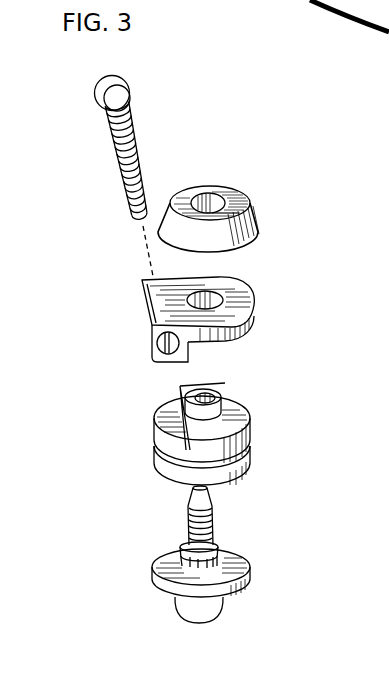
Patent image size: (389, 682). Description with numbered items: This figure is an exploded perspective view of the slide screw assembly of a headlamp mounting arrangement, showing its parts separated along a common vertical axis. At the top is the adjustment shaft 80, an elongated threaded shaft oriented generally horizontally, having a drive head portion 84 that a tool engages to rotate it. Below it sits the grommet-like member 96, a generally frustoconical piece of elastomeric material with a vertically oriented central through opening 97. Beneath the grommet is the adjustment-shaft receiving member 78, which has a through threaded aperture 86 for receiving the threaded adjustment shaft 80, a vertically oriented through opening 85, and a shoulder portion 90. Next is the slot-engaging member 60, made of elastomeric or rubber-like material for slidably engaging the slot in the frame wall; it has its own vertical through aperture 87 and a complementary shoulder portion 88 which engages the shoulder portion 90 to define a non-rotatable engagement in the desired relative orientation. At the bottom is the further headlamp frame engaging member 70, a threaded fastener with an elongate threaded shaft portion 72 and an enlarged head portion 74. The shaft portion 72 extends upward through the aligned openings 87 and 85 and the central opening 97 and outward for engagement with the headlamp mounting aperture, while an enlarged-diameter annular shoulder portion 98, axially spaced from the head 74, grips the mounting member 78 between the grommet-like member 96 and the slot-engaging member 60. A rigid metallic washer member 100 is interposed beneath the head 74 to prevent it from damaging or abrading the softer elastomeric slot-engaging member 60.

The drive head portion 84 is at (128, 78).
The adjustment shaft 80 is at (109, 158).
The central through opening 97 is at (212, 205).
The grommet-like member 96 is at (235, 200).
The through opening 85 is at (212, 293).
The adjustment-shaft receiving member 78 is at (194, 329).
The threaded aperture 86 is at (160, 347).
The shoulder portion 90 is at (194, 356).
The shoulder portion 88 is at (180, 398).
The through aperture 87 is at (222, 390).
The slot-engaging member 60 is at (211, 412).
The headlamp frame engaging member 70 is at (215, 561).
The threaded shaft portion 72 is at (213, 510).
The annular shoulder portion 98 is at (218, 541).
The washer member 100 is at (250, 571).
The enlarged head portion 74 is at (222, 616).